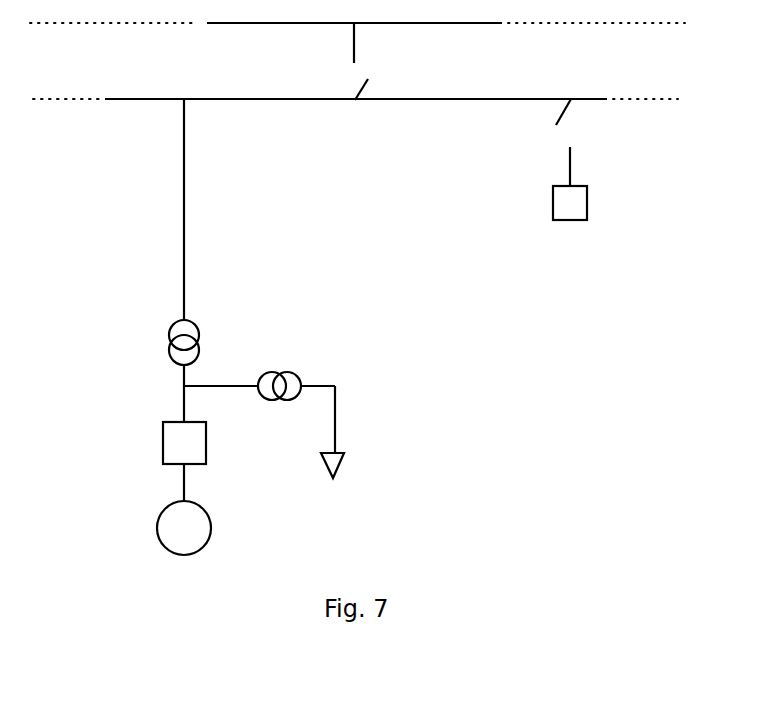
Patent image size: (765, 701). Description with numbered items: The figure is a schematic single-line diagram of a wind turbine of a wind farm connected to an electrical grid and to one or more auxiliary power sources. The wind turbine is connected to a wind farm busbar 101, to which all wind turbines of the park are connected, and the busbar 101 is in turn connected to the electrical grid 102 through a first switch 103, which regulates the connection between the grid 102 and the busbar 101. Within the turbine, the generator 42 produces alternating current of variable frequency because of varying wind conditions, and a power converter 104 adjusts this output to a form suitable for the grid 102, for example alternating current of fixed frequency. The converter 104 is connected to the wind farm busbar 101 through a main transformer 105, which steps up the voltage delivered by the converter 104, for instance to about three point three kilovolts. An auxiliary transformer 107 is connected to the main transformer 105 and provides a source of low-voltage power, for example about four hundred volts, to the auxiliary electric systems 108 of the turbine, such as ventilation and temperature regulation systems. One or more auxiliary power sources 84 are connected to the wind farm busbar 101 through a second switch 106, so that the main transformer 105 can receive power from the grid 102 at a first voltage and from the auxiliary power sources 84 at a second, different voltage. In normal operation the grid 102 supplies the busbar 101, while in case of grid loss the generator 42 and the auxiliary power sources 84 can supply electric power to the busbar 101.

The generator 42 is at (211, 528).
The auxiliary power source 84 is at (587, 203).
The wind farm busbar 101 is at (253, 99).
The electrical grid 102 is at (266, 23).
The first switch 103 is at (362, 84).
The power converter 104 is at (163, 445).
The main transformer 105 is at (170, 333).
The second switch 106 is at (565, 110).
The auxiliary transformer 107 is at (284, 373).
The auxiliary electric systems 108 is at (338, 467).